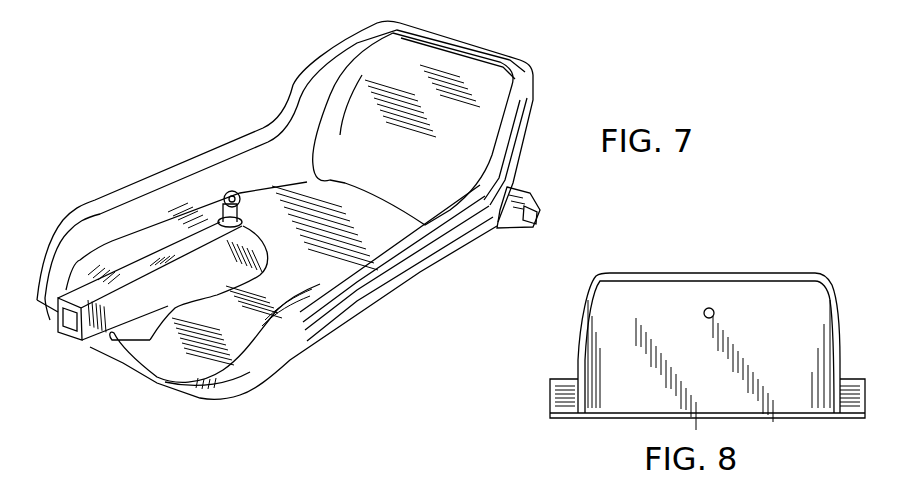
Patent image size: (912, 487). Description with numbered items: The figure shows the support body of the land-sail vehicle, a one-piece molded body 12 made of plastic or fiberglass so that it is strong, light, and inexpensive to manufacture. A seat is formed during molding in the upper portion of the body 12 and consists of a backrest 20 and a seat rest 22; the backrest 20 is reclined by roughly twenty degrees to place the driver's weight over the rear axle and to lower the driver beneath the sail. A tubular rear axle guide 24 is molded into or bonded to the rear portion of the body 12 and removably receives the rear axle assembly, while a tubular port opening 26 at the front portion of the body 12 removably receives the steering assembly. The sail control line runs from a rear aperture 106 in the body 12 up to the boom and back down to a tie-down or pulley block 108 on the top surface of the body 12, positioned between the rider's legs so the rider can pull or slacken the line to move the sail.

In FIG. 7, the one-piece molded body 12 is at (230, 120).
In FIG. 8, the one-piece molded body 12 is at (840, 250).
In FIG. 7, the backrest 20 is at (388, 102).
In FIG. 7, the seat rest 22 is at (292, 277).
In FIG. 7, the tubular rear axle guide 24 is at (542, 208).
In FIG. 8, the tubular rear axle guide 24 is at (563, 405).
In FIG. 7, the port opening 26 is at (72, 324).
In FIG. 8, the rear aperture 106 is at (712, 308).
In FIG. 7, the tie-down or pulley block 108 is at (222, 200).